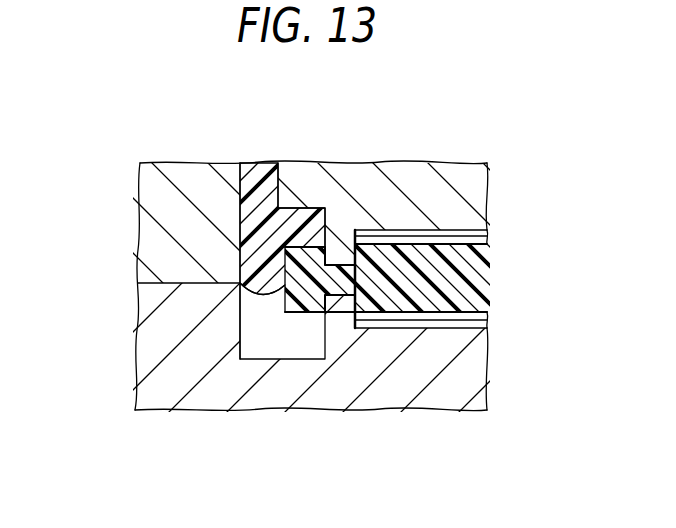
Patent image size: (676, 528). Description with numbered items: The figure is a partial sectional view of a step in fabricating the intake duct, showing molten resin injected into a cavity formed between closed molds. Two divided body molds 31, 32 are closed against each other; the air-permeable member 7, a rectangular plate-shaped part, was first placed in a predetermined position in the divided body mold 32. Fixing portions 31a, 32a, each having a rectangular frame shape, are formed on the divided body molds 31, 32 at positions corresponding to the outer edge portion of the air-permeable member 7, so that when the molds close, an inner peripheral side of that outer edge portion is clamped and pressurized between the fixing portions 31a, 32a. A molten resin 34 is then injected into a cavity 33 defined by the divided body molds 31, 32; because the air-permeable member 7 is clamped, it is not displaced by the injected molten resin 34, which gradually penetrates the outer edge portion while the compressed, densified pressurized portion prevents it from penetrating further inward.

The divided body mold 31 is at (152, 196).
The divided body mold 32 is at (150, 344).
The fixing portion 31a is at (490, 233).
The fixing portion 32a is at (488, 320).
The air-permeable member 7 is at (470, 279).
The cavity 33 is at (287, 346).
The molten resin 34 is at (266, 166).